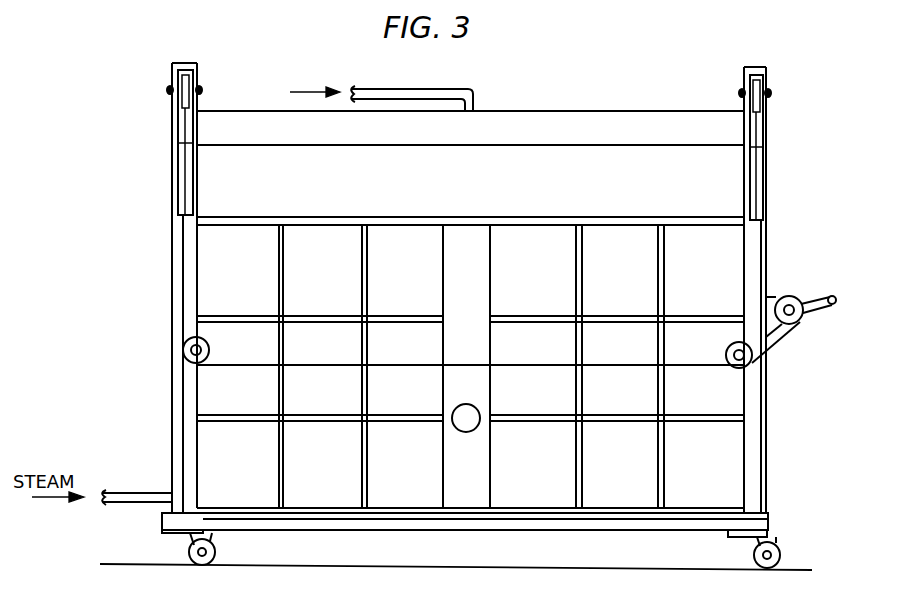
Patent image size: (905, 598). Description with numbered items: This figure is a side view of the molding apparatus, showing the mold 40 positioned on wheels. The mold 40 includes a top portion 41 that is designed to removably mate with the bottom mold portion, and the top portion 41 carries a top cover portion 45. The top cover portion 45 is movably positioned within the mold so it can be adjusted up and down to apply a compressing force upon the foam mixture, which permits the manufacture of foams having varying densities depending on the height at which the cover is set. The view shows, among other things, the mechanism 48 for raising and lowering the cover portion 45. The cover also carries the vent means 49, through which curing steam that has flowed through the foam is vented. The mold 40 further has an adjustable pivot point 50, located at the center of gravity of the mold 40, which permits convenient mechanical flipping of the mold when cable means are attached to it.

The mold 40 is at (776, 245).
The top portion 41 is at (766, 431).
The top cover portion 45 is at (521, 118).
The mechanism for raising and lowering cover portion 48 is at (806, 293).
The vent means 49 is at (612, 116).
The adjustable pivot point 50 is at (471, 431).